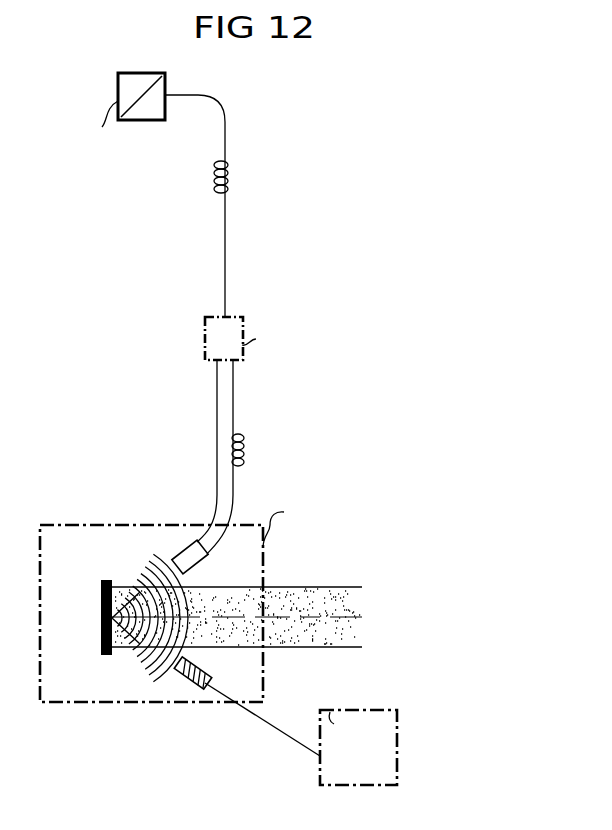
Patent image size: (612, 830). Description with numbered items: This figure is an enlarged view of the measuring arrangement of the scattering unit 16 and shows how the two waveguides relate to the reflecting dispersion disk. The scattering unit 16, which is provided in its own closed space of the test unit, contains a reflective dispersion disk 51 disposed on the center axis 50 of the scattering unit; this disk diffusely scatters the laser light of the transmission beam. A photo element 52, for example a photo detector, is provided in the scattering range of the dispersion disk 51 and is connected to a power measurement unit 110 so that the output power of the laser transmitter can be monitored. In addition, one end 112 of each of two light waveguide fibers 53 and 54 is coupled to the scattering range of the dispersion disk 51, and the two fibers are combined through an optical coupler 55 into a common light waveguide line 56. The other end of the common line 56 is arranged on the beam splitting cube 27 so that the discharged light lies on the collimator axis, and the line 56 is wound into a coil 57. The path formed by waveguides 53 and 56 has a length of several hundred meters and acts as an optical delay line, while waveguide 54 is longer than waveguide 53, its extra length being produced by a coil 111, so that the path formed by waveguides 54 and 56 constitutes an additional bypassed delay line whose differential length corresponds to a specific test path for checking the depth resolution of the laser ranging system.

The beam splitting cube 27 is at (130, 73).
The common light waveguide line 56 is at (226, 244).
The coil 57 is at (228, 176).
The optical coupler 55 is at (240, 318).
The light waveguide line 53 is at (216, 401).
The light waveguide line 54 is at (234, 409).
The coil 111 is at (245, 458).
The scattering unit 16 is at (64, 528).
The end of light waveguide line 112 is at (182, 556).
The center axis 50 is at (298, 602).
The reflective dispersion disk 51 is at (100, 646).
The photo element 52 is at (187, 690).
The power measurement unit 110 is at (322, 775).